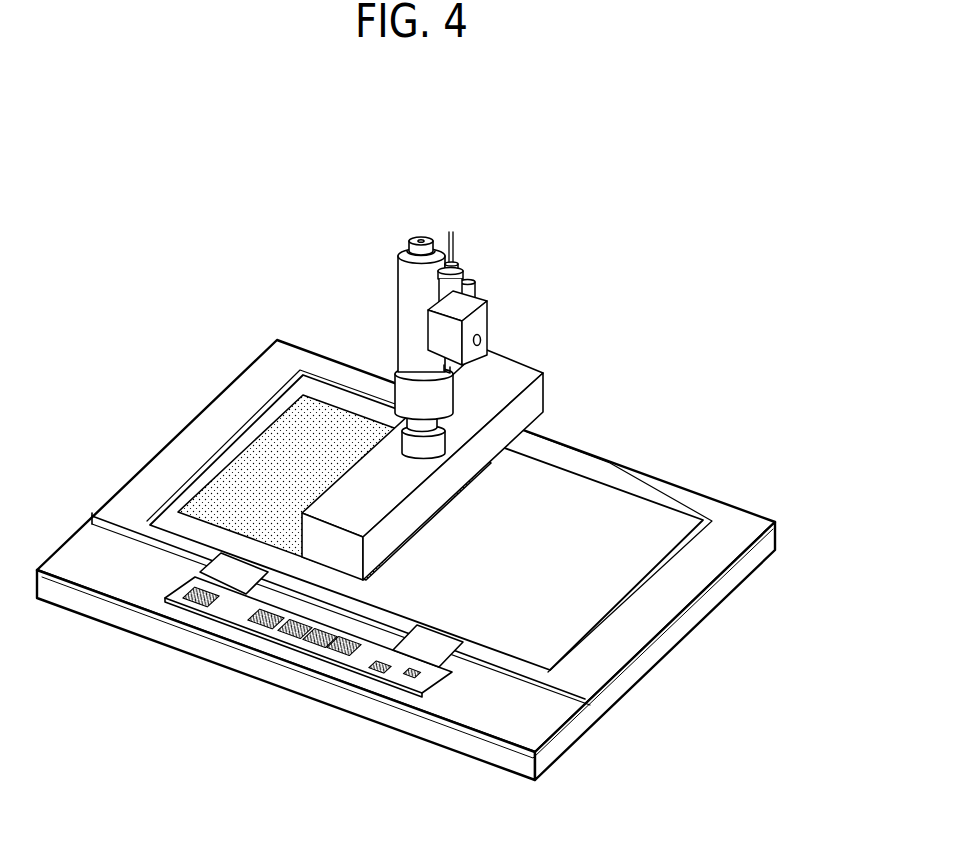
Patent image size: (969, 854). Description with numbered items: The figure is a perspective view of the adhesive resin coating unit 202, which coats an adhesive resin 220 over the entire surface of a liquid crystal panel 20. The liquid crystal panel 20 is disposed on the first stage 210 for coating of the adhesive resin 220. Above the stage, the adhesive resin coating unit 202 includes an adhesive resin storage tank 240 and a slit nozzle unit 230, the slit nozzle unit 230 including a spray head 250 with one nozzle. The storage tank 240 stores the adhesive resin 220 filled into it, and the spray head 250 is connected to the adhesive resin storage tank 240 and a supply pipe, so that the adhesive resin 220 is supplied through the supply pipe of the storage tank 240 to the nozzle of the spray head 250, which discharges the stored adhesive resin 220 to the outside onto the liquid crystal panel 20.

The adhesive resin coating unit 202 is at (347, 194).
The first stage 210 is at (145, 490).
The adhesive resin 220 is at (276, 468).
The slit nozzle unit 230 is at (495, 406).
The adhesive resin storage tank 240 is at (472, 297).
The spray head 250 is at (530, 402).
The liquid crystal panel 20 is at (575, 600).